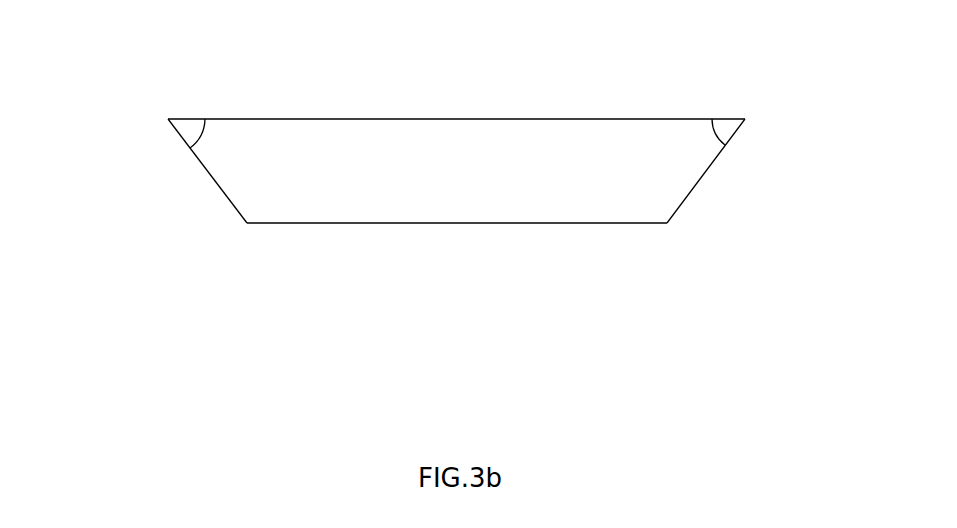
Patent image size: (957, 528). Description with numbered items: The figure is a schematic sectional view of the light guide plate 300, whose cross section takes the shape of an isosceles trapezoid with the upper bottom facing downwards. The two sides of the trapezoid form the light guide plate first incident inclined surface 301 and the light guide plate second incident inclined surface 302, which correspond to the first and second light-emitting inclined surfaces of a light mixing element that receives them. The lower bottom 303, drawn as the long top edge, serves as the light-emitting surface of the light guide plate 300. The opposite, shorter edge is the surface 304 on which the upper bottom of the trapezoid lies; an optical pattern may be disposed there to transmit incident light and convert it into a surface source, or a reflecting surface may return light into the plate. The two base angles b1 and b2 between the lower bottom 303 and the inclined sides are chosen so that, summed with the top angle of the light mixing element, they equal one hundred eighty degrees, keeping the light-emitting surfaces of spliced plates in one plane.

The light guide plate 300 is at (461, 220).
The light guide plate first incident inclined surface 301 is at (705, 173).
The light guide plate second incident inclined surface 302 is at (207, 172).
The lower bottom 303 is at (412, 119).
The surface on which the upper bottom of the trapezoid is located 304 is at (425, 223).
The base angle b1 is at (698, 140).
The base angle b2 is at (220, 141).